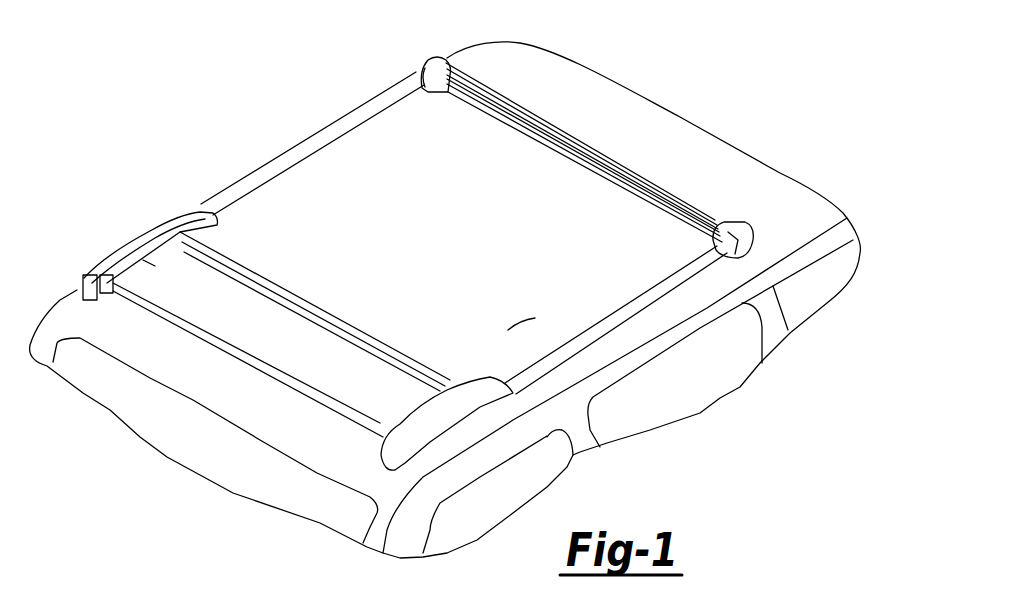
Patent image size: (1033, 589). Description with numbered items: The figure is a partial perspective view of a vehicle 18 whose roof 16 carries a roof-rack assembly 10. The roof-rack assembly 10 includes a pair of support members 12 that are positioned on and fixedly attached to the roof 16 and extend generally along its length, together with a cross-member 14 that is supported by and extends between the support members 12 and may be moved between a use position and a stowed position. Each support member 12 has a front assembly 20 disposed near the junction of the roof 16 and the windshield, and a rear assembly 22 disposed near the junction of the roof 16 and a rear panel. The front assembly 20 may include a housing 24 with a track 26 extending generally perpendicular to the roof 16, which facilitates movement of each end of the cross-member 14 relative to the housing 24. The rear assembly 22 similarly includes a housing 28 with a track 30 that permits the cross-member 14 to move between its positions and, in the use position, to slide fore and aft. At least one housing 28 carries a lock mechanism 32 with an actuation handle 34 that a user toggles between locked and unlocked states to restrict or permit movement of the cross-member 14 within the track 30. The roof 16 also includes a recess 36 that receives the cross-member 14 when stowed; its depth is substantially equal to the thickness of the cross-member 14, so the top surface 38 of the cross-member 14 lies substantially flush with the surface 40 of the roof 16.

The roof-rack assembly 10 is at (257, 159).
The support members 12 is at (310, 138).
The cross-member 14 is at (437, 249).
The roof 16 is at (435, 241).
The vehicle 18 is at (598, 74).
The front assembly 20 is at (740, 218).
The rear assembly 22 is at (119, 259).
The housing 24 is at (437, 57).
The track 26 is at (440, 82).
The housing 28 is at (153, 228).
The track 30 is at (143, 260).
The lock mechanism 32 is at (94, 298).
The actuation handle 34 is at (83, 283).
The recess 36 is at (595, 174).
The top surface 38 is at (418, 368).
The surface 40 is at (508, 330).